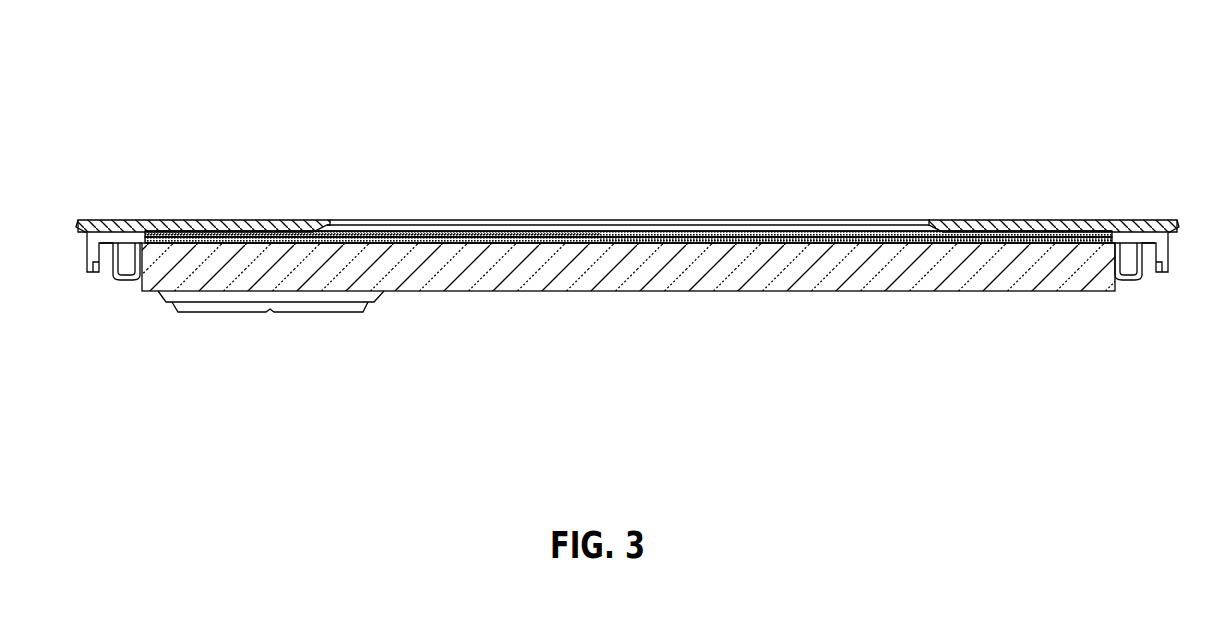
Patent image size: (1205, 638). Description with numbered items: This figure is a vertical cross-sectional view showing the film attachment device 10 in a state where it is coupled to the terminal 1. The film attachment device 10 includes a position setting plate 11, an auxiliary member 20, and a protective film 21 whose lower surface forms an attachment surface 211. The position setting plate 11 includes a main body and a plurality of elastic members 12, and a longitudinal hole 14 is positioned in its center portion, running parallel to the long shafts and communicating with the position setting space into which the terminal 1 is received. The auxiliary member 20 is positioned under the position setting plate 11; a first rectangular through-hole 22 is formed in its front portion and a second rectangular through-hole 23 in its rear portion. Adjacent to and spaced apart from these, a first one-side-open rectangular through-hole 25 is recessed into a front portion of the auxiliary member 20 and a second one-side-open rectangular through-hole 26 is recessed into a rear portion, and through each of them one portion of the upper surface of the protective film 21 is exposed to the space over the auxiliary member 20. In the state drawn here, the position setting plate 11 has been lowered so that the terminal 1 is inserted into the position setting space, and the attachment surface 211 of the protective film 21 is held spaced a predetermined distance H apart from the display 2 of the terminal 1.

The film attachment device 10 is at (274, 120).
The terminal 1 is at (767, 262).
The display 2 is at (597, 243).
The position setting plate 11 is at (268, 220).
The elastic members 12 is at (127, 220).
The longitudinal hole 14 is at (885, 221).
The auxiliary member 20 is at (617, 237).
The protective film 21 is at (520, 232).
The first rectangular through-hole 22 is at (382, 231).
The second rectangular through-hole 23 is at (847, 237).
The first one-side-open rectangular through-hole 25 is at (168, 220).
The second one-side-open rectangular through-hole 26 is at (1083, 221).
The attachment surface 211 is at (470, 243).
The predetermined distance H is at (920, 243).